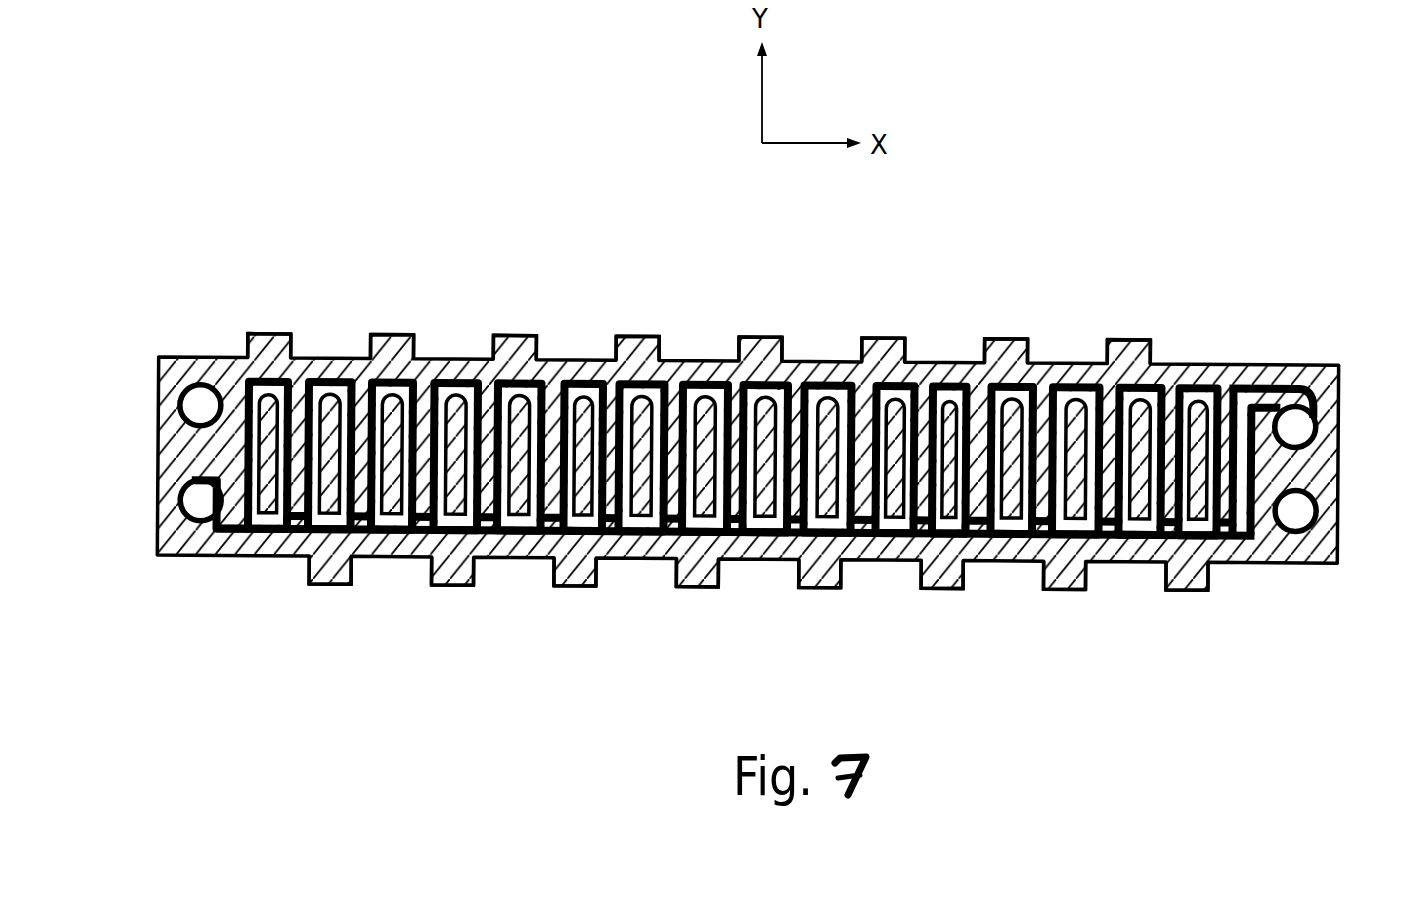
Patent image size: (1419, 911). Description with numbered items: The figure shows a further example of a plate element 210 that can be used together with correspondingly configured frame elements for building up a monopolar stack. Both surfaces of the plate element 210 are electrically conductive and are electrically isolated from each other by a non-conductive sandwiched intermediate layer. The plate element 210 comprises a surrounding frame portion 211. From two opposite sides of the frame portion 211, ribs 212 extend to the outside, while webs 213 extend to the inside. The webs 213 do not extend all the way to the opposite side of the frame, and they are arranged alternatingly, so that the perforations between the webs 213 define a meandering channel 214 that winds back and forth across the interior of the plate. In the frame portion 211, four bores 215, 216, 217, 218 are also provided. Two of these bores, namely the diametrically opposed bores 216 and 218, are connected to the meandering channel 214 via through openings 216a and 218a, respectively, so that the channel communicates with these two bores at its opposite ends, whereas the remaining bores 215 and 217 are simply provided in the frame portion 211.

The plate element 210 is at (748, 356).
The frame portion 211 is at (748, 462).
The ribs 212 is at (728, 462).
The webs 213 is at (735, 458).
The meandering channel 214 is at (733, 457).
The bore 215 is at (200, 405).
The bore 216 is at (200, 500).
The through opening 216a is at (220, 504).
The bore 217 is at (1295, 510).
The bore 218 is at (1295, 426).
The through opening 218a is at (1270, 462).